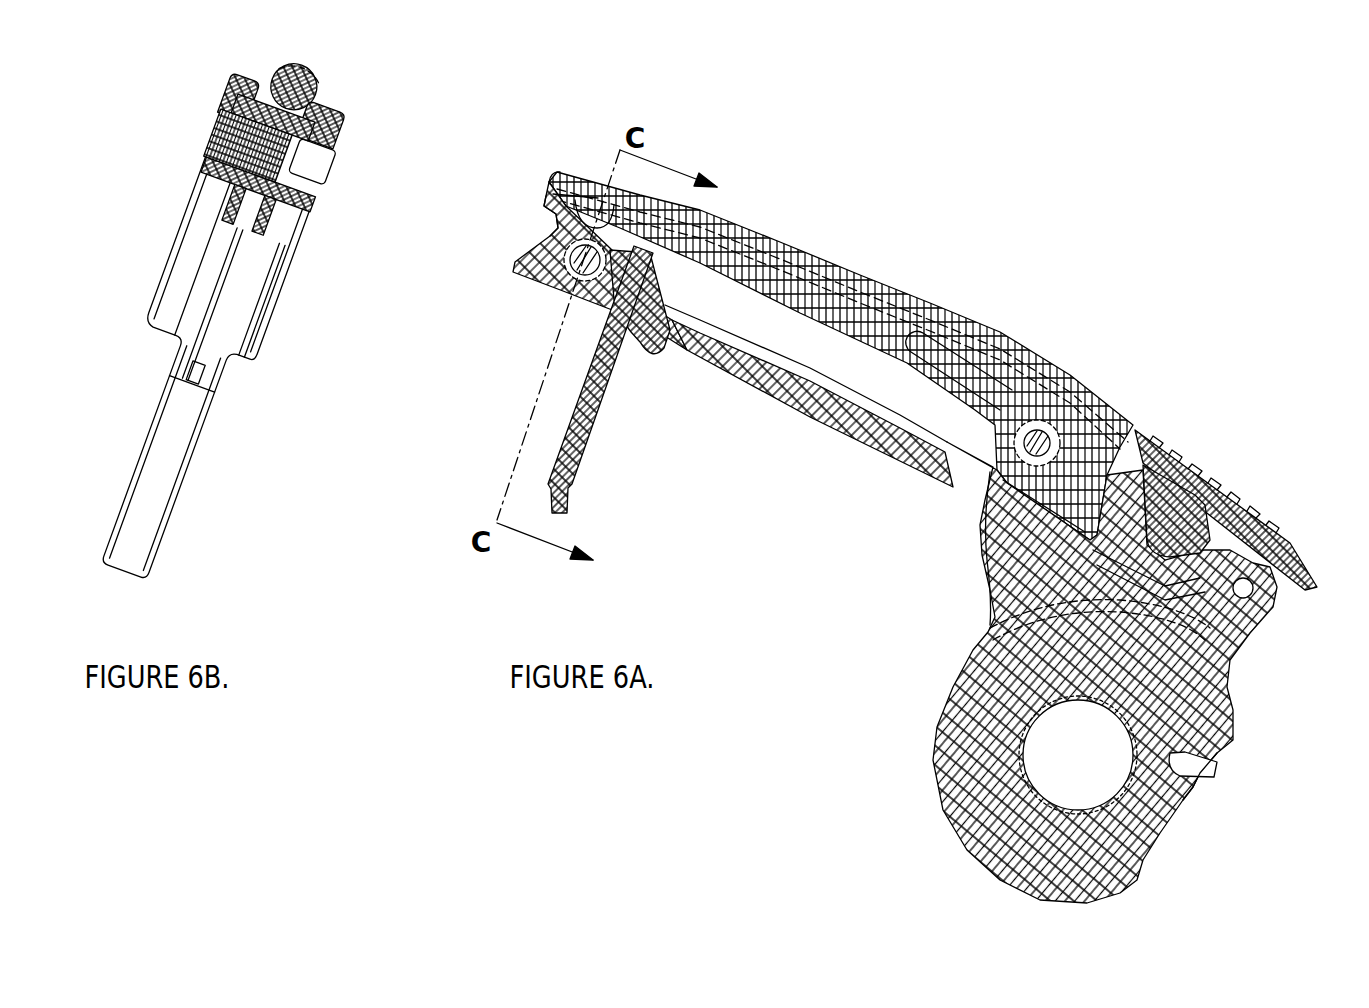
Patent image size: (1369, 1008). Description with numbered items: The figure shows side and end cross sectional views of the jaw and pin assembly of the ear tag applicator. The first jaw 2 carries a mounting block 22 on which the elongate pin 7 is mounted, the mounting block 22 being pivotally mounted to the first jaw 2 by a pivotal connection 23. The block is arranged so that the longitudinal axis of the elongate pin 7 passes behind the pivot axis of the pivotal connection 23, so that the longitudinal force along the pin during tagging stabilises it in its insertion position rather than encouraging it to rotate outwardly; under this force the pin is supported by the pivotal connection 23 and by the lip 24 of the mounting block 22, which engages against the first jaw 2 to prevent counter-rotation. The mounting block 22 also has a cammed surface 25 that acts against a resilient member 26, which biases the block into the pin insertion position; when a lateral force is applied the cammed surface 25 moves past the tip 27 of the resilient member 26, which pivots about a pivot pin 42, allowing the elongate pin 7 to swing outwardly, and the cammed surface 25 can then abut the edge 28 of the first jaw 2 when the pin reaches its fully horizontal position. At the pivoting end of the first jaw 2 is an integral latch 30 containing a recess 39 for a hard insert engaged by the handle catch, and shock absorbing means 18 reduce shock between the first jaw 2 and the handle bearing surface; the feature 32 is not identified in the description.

In FIG. 6A, the first jaw 2 is at (913, 527).
In FIG. 6A, the elongate pin 7 is at (570, 467).
In FIG. 6B, the elongate pin 7 is at (220, 357).
In FIG. 6A, the shock absorbing means 18 is at (1217, 487).
In FIG. 6A, the mounting block 22 is at (687, 360).
In FIG. 6A, the pivotal connection 23 is at (543, 280).
In FIG. 6B, the pivotal connection 23 is at (220, 113).
In FIG. 6A, the lip 24 is at (643, 357).
In FIG. 6A, the cammed surface 25 is at (547, 207).
In FIG. 6A, the resilient member 26 is at (990, 337).
In FIG. 6A, the tip of the member 27 is at (587, 188).
In FIG. 6A, the edge of the jaw 28 is at (740, 230).
In FIG. 6A, the integral latch 30 is at (980, 782).
In FIG. 6A, the notch 32 is at (1205, 793).
In FIG. 6A, the recess 39 is at (1203, 780).
In FIG. 6A, the pivot pin 42 is at (1080, 423).